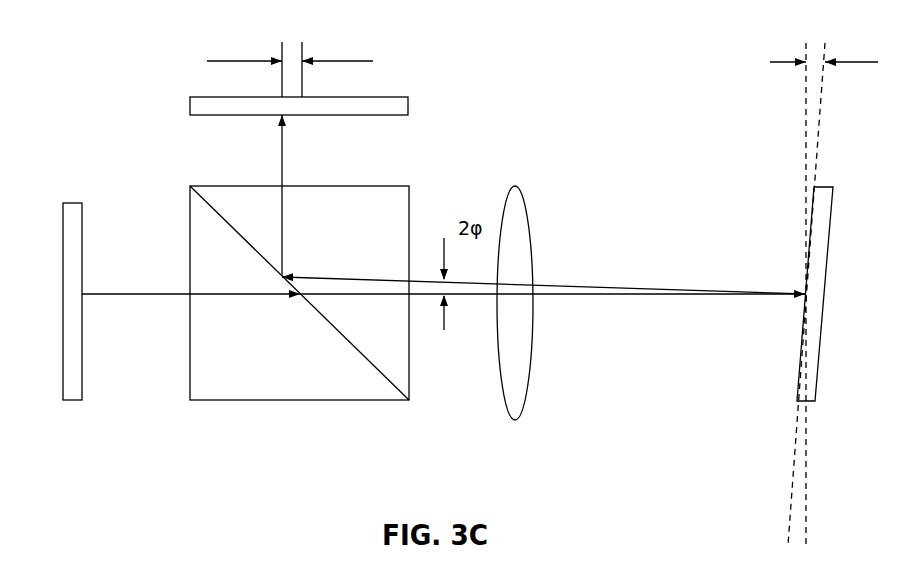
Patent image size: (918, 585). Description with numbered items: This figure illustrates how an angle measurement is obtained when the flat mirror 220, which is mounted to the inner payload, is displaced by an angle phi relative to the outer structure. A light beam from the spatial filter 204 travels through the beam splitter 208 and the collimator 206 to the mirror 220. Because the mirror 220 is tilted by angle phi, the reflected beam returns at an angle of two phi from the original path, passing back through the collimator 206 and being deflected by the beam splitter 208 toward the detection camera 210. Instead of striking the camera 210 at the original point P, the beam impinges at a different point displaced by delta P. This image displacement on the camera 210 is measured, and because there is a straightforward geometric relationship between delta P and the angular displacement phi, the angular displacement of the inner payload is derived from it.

The spatial filter 204 is at (82, 203).
The collimator 206 is at (533, 380).
The beam splitter 208 is at (225, 400).
The detection camera 210 is at (210, 97).
The flat mirror 220 is at (822, 365).